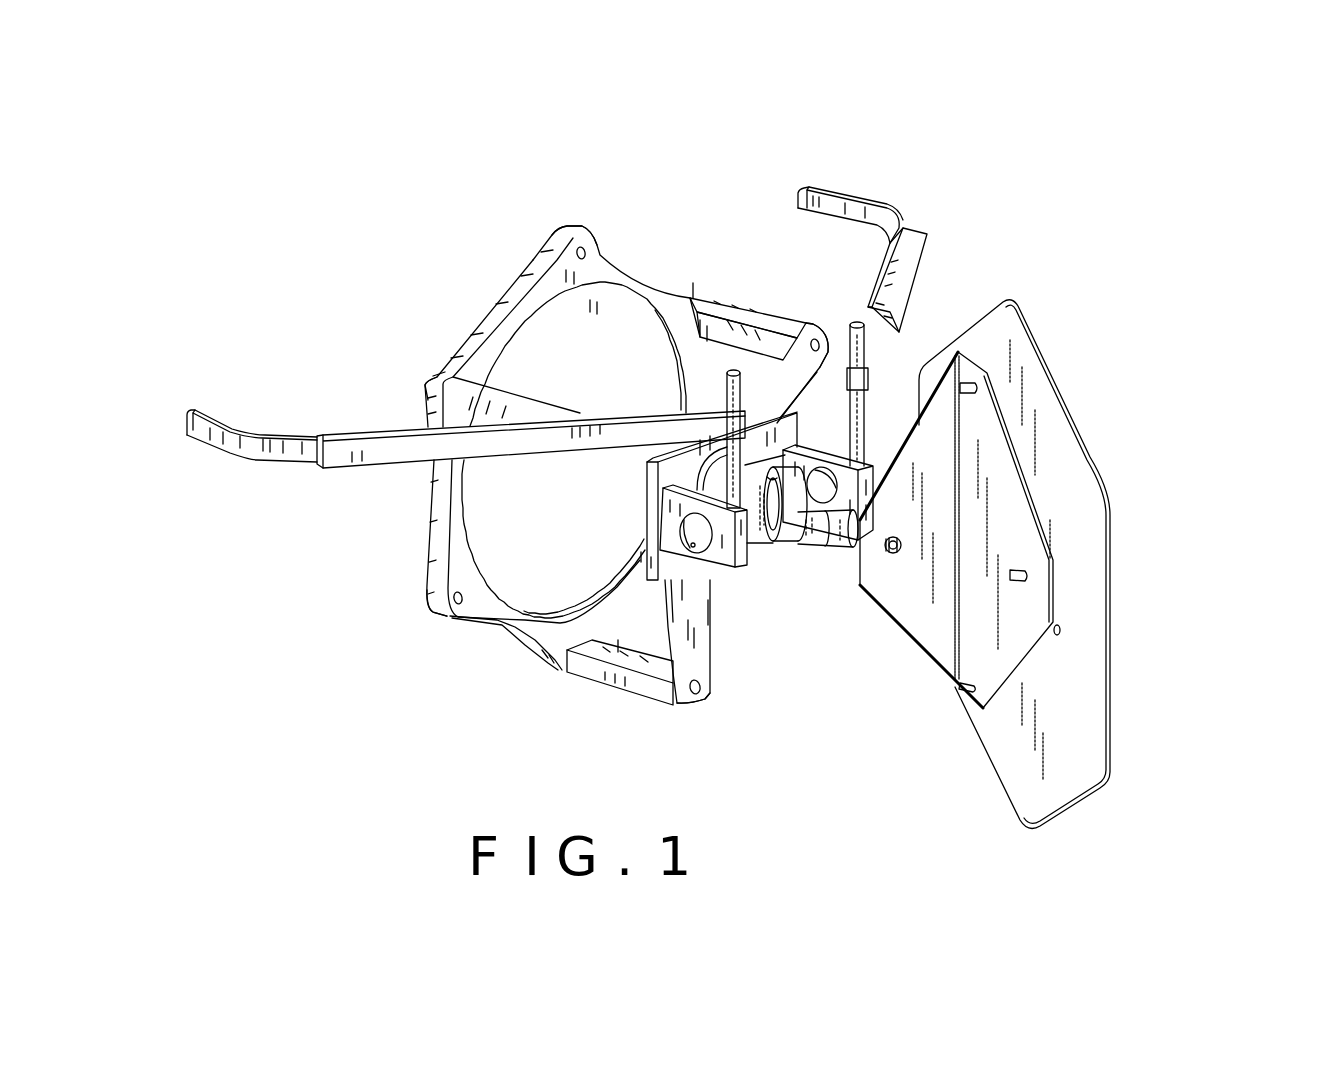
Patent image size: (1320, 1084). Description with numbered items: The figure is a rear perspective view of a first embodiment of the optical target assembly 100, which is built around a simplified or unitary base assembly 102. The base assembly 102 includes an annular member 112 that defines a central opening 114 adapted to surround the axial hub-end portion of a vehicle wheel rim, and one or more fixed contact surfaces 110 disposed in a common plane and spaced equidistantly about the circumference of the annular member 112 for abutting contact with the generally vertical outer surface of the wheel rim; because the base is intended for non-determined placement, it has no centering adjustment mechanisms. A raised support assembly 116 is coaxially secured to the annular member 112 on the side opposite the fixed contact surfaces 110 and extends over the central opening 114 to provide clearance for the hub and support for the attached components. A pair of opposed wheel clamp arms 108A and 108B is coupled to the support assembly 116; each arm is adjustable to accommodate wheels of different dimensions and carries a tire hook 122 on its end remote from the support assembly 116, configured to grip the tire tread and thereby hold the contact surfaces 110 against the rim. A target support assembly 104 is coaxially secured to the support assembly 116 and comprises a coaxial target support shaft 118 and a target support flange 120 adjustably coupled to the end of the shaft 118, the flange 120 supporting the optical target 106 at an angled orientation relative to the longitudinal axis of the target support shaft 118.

The optical target assembly 100 is at (432, 683).
The base assembly 102 is at (793, 302).
The target support assembly 104 is at (787, 567).
The optical target 106 is at (1130, 590).
The wheel clamp arm 108A is at (273, 463).
The wheel clamp arm 108B is at (922, 208).
The fixed contact surfaces 110 is at (560, 225).
The annular member 112 is at (505, 318).
The central opening 114 is at (622, 375).
The raised support assembly 116 is at (620, 480).
The target support shaft 118 is at (838, 537).
The target support flange 120 is at (924, 603).
The tire hook 122 is at (187, 425).